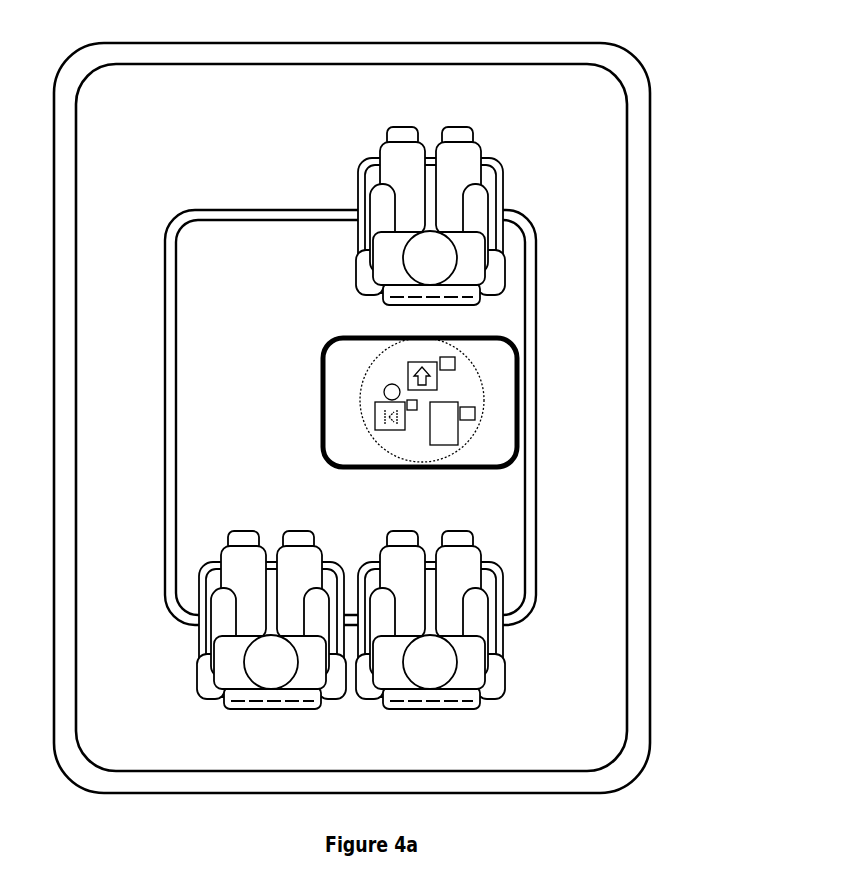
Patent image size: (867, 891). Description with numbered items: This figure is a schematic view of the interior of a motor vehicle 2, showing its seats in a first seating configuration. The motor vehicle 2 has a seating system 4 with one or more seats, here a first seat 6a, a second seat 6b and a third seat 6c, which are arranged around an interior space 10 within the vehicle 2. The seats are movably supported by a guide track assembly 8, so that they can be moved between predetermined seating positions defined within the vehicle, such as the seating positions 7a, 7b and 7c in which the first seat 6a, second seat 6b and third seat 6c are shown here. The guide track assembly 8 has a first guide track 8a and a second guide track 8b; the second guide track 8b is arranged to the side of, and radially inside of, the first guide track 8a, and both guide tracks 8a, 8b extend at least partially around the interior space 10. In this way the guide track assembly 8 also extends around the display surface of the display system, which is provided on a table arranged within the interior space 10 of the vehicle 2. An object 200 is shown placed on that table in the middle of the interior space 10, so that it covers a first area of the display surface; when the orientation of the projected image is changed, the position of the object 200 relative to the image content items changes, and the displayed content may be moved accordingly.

The motor vehicle 2 is at (692, 92).
The seating system 4 is at (600, 255).
The first seat 6a is at (500, 172).
The second seat 6b is at (202, 640).
The third seat 6c is at (500, 657).
The predetermined seating position 7a is at (504, 191).
The predetermined seating position 7b is at (202, 692).
The predetermined seating position 7c is at (500, 632).
The guide track assembly 8 is at (433, 417).
The first guide track 8a is at (535, 408).
The second guide track 8b is at (525, 392).
The interior space 10 is at (270, 423).
The object 200 is at (392, 384).